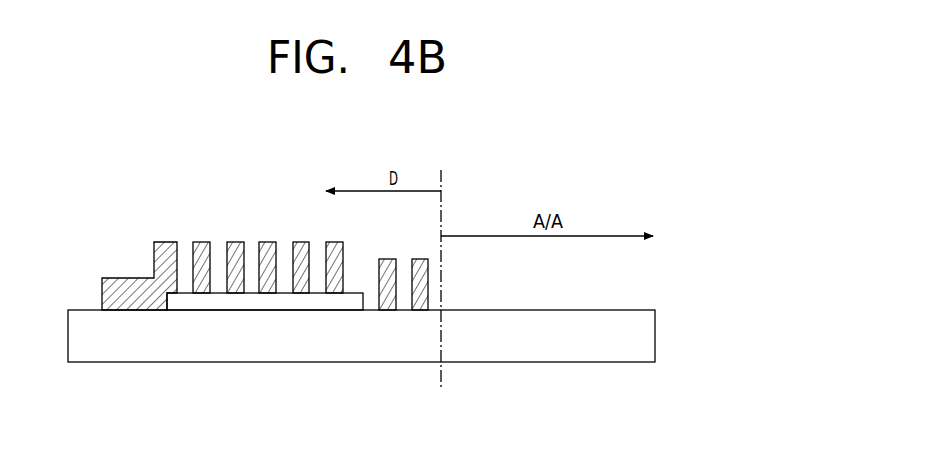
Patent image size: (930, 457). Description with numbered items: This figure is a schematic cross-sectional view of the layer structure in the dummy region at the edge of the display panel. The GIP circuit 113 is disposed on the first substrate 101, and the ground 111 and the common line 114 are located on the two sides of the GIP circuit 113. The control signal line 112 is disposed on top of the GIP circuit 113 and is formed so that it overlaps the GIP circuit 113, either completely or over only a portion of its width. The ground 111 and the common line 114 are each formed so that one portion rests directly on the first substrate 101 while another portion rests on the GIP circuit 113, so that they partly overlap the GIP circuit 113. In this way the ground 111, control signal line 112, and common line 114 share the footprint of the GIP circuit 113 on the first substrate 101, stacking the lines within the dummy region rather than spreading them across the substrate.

The first substrate 101 is at (655, 337).
The ground 111 is at (132, 310).
The control signal line 112 is at (307, 226).
The GIP circuit 113 is at (267, 304).
The common line 114 is at (428, 226).